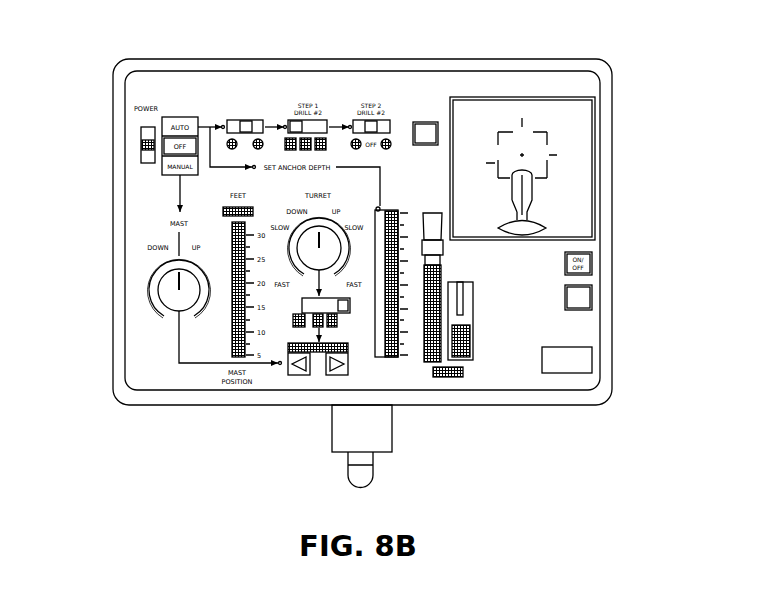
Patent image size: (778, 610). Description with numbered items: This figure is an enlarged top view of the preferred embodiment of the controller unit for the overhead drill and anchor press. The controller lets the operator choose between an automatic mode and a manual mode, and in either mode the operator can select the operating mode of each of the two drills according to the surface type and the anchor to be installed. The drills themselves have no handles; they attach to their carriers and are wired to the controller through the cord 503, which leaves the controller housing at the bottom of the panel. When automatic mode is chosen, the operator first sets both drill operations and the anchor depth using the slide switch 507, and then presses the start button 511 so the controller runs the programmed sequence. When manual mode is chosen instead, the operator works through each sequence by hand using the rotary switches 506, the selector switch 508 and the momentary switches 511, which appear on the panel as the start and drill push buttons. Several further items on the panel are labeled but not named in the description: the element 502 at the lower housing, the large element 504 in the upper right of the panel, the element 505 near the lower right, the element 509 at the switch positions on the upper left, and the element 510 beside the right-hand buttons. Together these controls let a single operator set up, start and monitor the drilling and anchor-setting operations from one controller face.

The control panel housing connector 502 is at (330, 455).
The cord 503 is at (345, 479).
The LCD display 504 is at (578, 169).
The counter 505 is at (580, 373).
The rotary switches 506 is at (147, 296).
The slide switch 507 is at (376, 362).
The selector switch 508 is at (296, 309).
The switch 509 is at (225, 112).
The laser on/off button 510 is at (594, 298).
The start button 511 is at (411, 117).